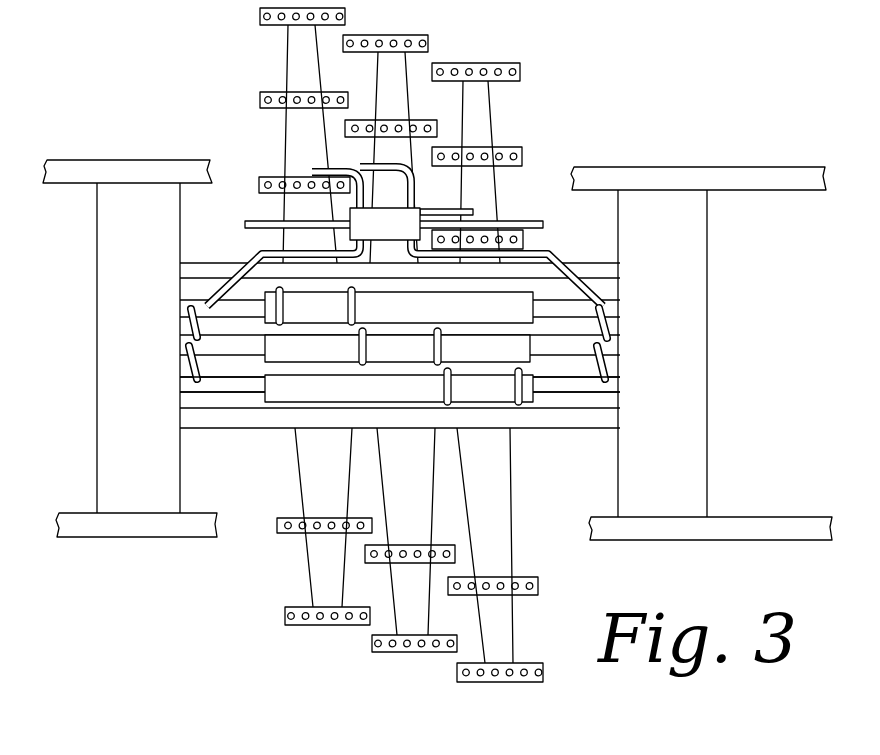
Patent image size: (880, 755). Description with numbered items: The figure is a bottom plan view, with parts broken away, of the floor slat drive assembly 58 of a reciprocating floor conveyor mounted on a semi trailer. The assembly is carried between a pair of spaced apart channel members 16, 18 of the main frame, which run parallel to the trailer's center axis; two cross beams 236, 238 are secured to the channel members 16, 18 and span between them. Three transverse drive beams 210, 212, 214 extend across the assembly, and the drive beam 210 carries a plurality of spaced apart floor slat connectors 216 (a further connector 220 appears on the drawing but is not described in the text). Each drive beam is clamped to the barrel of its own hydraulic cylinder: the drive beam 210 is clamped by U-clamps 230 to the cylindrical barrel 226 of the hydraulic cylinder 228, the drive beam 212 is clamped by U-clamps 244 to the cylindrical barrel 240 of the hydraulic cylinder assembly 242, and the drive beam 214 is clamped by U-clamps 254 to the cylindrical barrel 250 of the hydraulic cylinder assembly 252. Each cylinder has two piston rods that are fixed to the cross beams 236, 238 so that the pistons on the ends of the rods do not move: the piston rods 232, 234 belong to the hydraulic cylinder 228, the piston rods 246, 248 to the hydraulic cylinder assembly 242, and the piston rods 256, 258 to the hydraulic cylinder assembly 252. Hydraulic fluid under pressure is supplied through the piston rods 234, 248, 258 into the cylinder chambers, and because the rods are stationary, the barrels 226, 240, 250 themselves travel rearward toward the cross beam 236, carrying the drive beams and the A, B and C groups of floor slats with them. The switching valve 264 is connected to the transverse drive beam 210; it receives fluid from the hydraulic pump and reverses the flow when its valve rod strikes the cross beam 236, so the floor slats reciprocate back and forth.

The channel member 16 is at (103, 163).
The channel member 18 is at (100, 525).
The floor slat drive assembly 58 is at (258, 550).
The transverse drive beam 210 is at (293, 39).
The transverse drive beam 212 is at (405, 73).
The transverse drive beam 214 is at (488, 100).
The floor slat connector 216 is at (283, 618).
The second lower column 220 is at (370, 645).
The cylindrical barrel 226 is at (522, 300).
The hydraulic cylinder 228 is at (482, 307).
The U-clamp 230 is at (264, 293).
The piston rod 232 is at (185, 306).
The piston rod 234 is at (613, 309).
The cross beam 236 is at (110, 205).
The cross beam 238 is at (688, 212).
The cylindrical barrel 240 is at (273, 348).
The hydraulic cylinder assembly 242 is at (523, 343).
The U-clamp 244 is at (357, 345).
The piston rod 246 is at (185, 351).
The piston rod 248 is at (610, 348).
The cylindrical barrel 250 is at (342, 390).
The hydraulic cylinder assembly 252 is at (530, 397).
The U-clamp 254 is at (520, 403).
The piston rod 256 is at (185, 383).
The piston rod 258 is at (610, 387).
The switching valve 264 is at (350, 217).